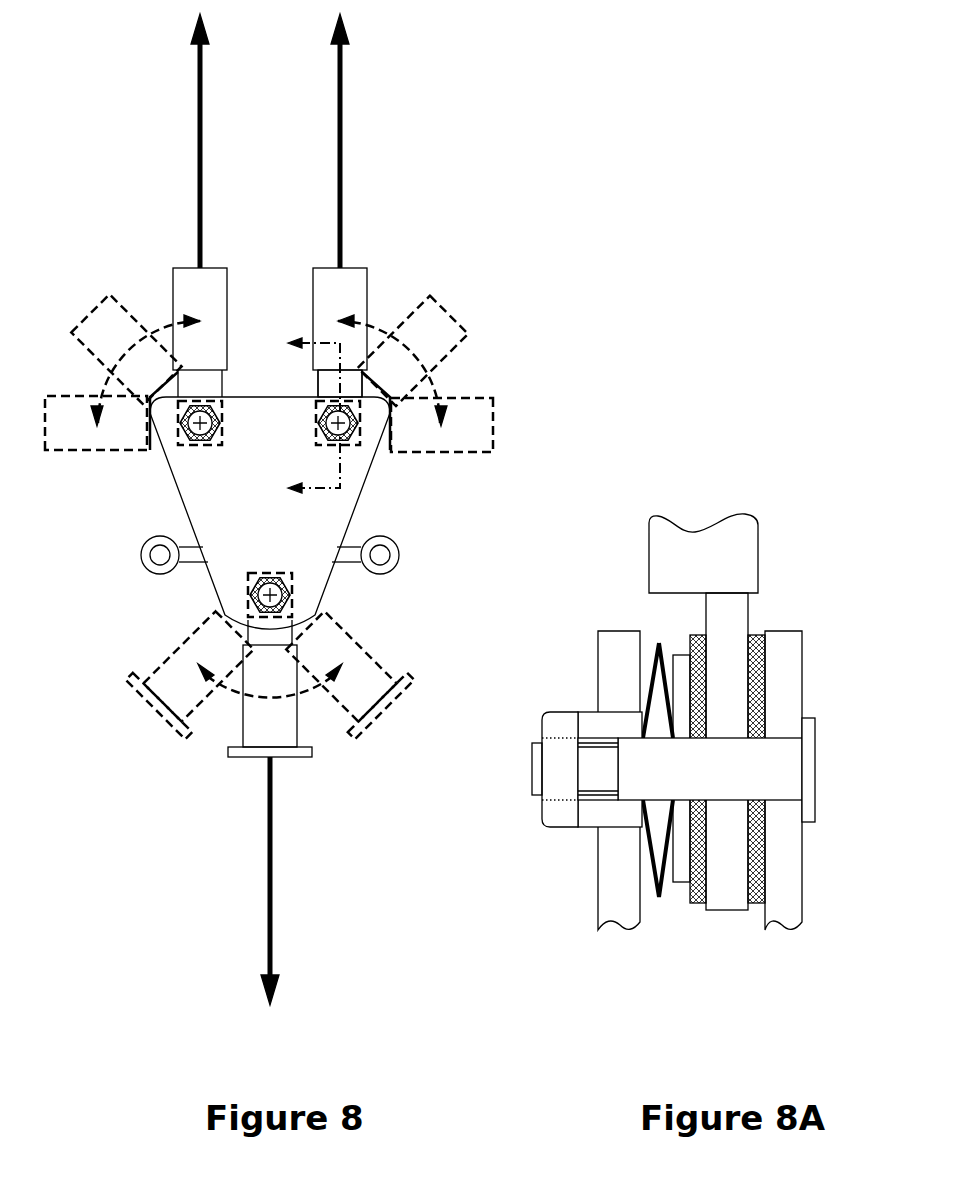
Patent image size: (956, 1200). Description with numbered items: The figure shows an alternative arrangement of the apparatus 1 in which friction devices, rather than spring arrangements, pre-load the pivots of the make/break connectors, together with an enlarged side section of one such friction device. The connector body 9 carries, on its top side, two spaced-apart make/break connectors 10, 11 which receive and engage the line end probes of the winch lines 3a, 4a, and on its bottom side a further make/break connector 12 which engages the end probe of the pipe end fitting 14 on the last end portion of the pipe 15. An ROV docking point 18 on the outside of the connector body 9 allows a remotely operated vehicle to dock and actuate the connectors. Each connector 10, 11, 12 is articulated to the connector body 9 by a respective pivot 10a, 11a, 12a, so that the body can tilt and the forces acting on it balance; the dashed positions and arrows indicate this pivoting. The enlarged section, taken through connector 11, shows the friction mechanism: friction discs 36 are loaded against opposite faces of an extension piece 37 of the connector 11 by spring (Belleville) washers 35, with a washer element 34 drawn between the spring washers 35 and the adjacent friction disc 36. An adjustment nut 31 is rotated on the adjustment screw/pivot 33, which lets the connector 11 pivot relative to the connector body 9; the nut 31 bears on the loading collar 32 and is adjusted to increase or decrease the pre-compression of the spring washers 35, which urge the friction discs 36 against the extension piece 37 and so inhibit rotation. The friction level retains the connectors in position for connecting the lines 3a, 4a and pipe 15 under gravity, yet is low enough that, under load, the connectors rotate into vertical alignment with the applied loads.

In FIG. 8, the apparatus 1 is at (317, 509).
In FIG. 8, the line 3a is at (190, 162).
In FIG. 8, the line 4a is at (345, 167).
In FIG. 8, the connector body 9 is at (283, 525).
In FIG. 8A, the connector body 9 is at (622, 665).
In FIG. 8, the make/break connector 10 is at (185, 285).
In FIG. 8, the make/break connector 11 is at (355, 285).
In FIG. 8A, the make/break connector 11 is at (733, 545).
In FIG. 8, the make/break connector 12 is at (275, 718).
In FIG. 8, the pivot 10a is at (178, 432).
In FIG. 8, the pivot 11a is at (317, 432).
In FIG. 8, the pivot 12a is at (248, 600).
In FIG. 8, the pipe end fitting 14 is at (240, 751).
In FIG. 8, the pipe 15 is at (273, 818).
In FIG. 8, the ROV docking point 18 is at (137, 565).
In FIG. 8A, the adjustment nut 31 is at (558, 812).
In FIG. 8A, the loading collar 32 is at (610, 727).
In FIG. 8A, the adjustment screw/pivot 33 is at (725, 775).
In FIG. 8A, the washer 34 is at (680, 885).
In FIG. 8A, the spring (Belleville) washers 35 is at (650, 862).
In FIG. 8A, the friction discs 36 is at (697, 903).
In FIG. 8, the extension piece 37 is at (330, 383).
In FIG. 8A, the extension piece 37 is at (725, 903).